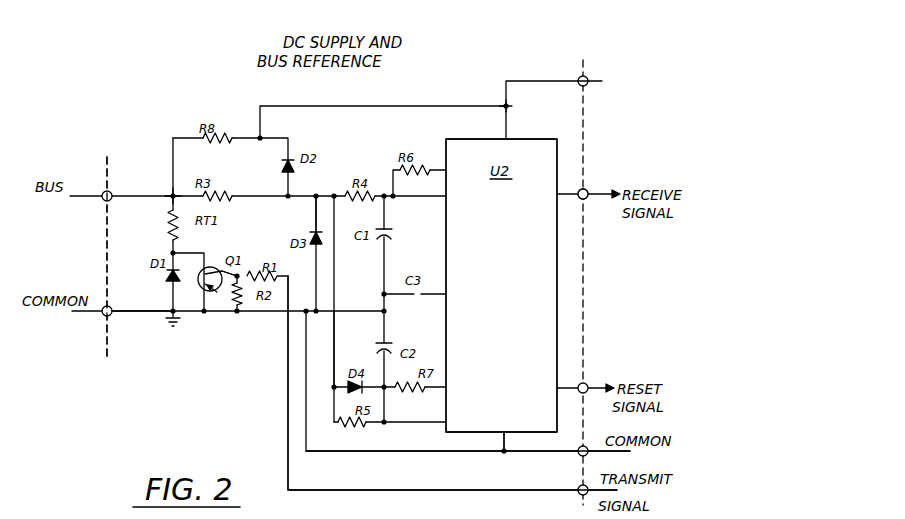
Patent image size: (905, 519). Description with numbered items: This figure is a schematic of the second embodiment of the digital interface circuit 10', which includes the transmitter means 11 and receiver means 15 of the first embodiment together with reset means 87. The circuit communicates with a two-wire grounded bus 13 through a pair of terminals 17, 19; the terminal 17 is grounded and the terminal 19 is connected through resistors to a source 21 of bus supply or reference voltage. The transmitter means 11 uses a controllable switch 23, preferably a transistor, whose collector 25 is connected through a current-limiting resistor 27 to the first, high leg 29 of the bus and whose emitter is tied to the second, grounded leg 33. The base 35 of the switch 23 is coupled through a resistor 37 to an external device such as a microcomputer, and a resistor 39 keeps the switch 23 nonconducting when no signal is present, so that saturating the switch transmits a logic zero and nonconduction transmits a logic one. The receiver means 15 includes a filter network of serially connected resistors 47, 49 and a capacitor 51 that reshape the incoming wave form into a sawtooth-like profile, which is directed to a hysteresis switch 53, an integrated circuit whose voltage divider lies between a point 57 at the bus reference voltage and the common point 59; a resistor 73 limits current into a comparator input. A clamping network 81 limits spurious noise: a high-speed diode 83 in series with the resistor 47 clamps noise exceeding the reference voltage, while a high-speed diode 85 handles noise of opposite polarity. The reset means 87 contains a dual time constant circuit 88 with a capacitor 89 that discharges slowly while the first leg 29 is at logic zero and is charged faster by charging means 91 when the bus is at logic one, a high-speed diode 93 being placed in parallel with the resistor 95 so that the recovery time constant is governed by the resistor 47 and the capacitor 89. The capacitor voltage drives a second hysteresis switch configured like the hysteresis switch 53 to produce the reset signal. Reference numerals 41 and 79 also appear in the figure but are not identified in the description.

The interface circuit 10' is at (169, 355).
The transmitter means 11 is at (243, 262).
The bus 13 is at (100, 292).
The receiver means 15 is at (318, 185).
The terminal 17 is at (107, 317).
The terminal 19 is at (109, 191).
The source of bus supply or reference voltage 21 is at (255, 104).
The controllable switch 23 is at (213, 292).
The collector 25 is at (200, 253).
The current-limiting resistor 27 is at (170, 230).
The first, high leg 29 is at (172, 193).
The second, grounded leg 33 is at (193, 312).
The base 35 is at (230, 280).
The resistor 37 is at (280, 274).
The resistor 39 is at (243, 300).
The diode D1 41 is at (166, 276).
The resistor 47 is at (203, 192).
The resistor 49 is at (350, 204).
The capacitor 51 is at (392, 233).
The hysteresis switch 53 is at (515, 135).
The point 57 is at (505, 105).
The ground or common point 59 is at (505, 455).
The resistor 73 is at (430, 170).
The receive signal terminal 79 is at (586, 192).
The clamping network 81 is at (322, 143).
The high-speed computer-type diode 83 is at (283, 167).
The high-speed computer-type diode 85 is at (312, 232).
The reset means 87 is at (437, 445).
The dual time constant circuit 88 is at (325, 386).
The capacitor 89 is at (389, 346).
The charging means 91 is at (350, 359).
The high-speed computer-type diode 93 is at (343, 390).
The resistor 95 is at (345, 430).